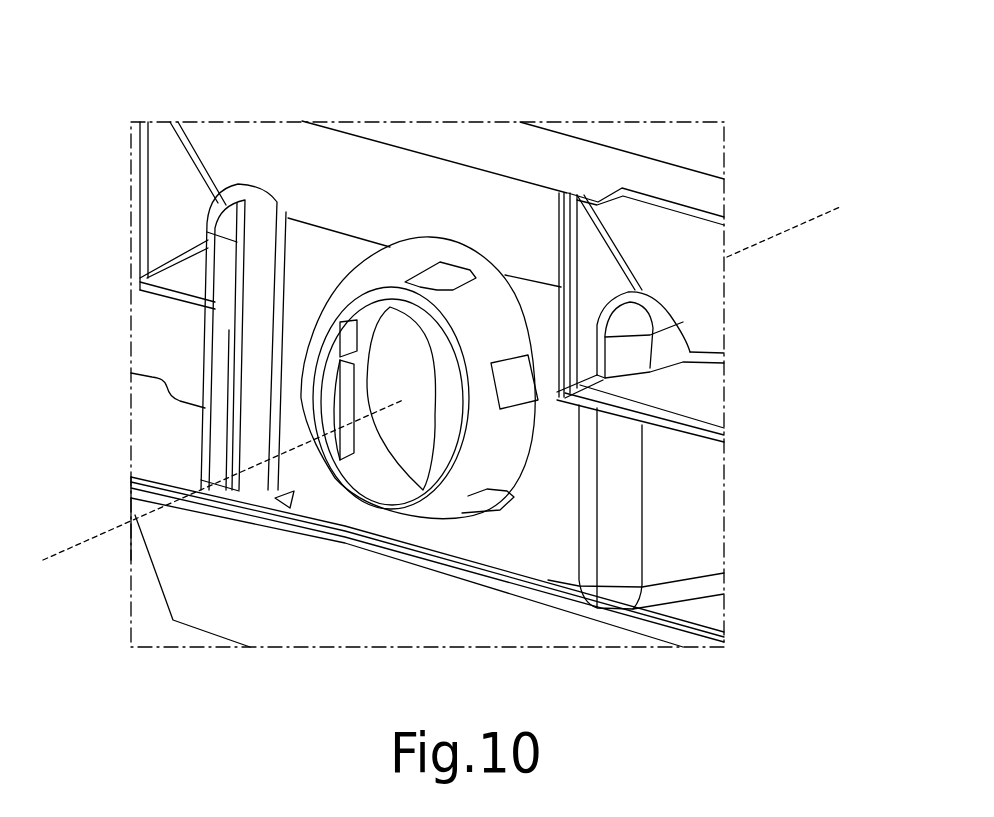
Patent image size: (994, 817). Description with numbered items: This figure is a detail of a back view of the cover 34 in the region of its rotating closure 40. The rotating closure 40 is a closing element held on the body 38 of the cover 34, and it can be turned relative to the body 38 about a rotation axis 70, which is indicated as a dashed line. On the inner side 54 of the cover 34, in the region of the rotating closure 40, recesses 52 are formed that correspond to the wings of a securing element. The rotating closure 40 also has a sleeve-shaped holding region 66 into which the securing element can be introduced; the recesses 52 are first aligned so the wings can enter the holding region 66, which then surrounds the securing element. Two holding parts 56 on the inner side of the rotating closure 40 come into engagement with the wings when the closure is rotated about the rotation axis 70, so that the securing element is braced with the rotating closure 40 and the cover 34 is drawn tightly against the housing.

The cover 34 is at (180, 90).
The body 38 is at (493, 200).
The rotating closure 40 is at (490, 300).
The recesses 52 is at (394, 333).
The inner side 54 is at (325, 516).
The holding parts 56 is at (340, 391).
The sleeve-shaped holding region 66 is at (492, 443).
The rotation axis 70 is at (768, 238).